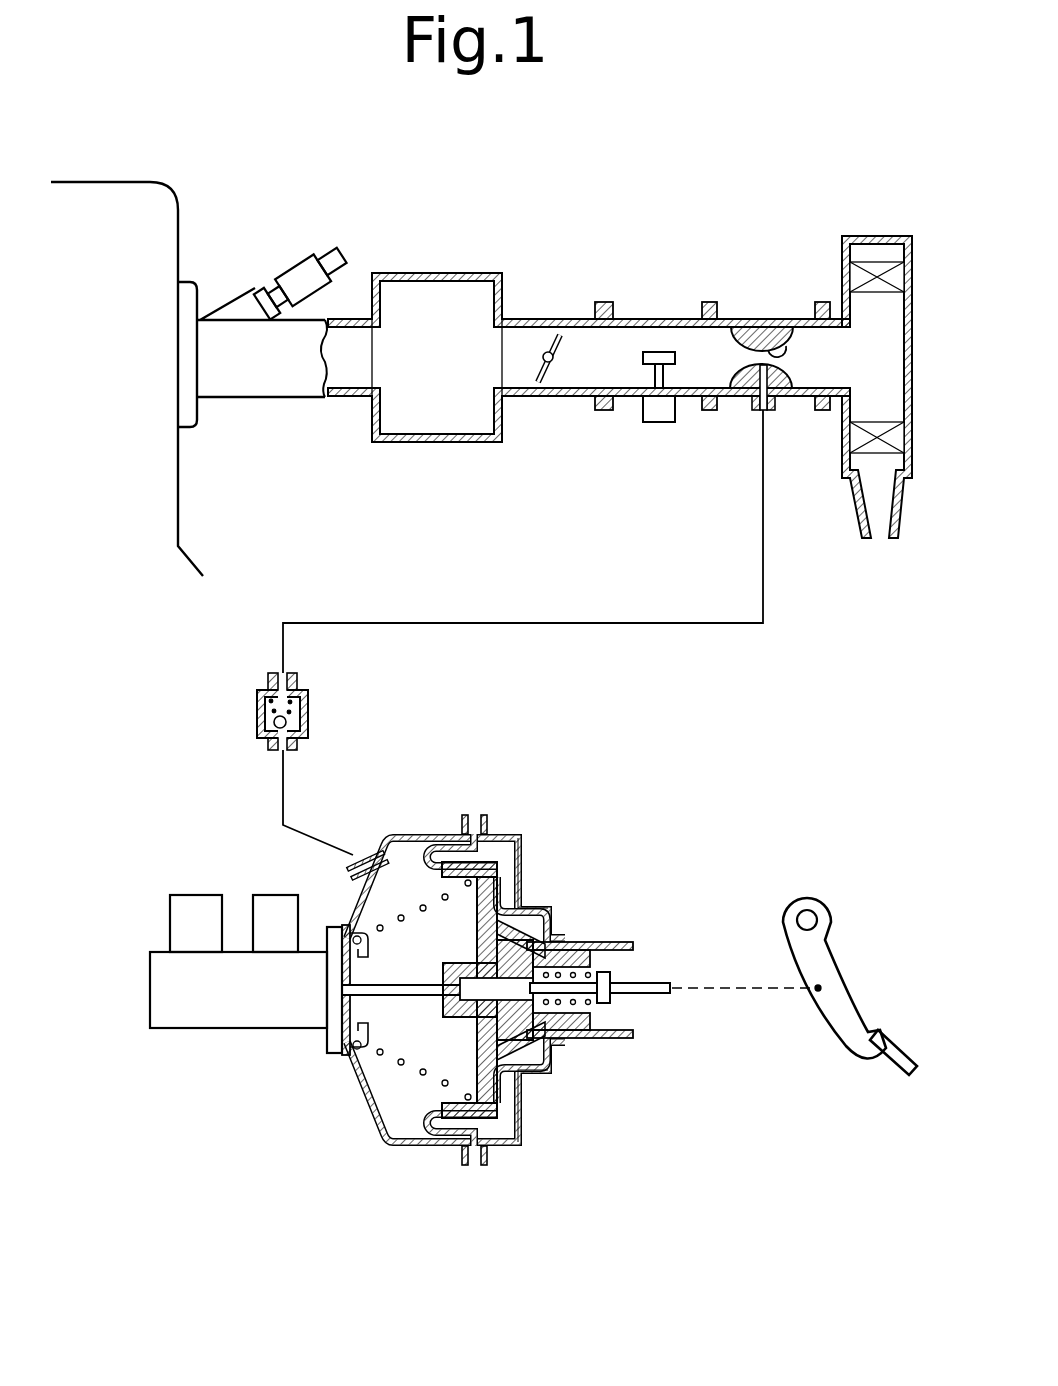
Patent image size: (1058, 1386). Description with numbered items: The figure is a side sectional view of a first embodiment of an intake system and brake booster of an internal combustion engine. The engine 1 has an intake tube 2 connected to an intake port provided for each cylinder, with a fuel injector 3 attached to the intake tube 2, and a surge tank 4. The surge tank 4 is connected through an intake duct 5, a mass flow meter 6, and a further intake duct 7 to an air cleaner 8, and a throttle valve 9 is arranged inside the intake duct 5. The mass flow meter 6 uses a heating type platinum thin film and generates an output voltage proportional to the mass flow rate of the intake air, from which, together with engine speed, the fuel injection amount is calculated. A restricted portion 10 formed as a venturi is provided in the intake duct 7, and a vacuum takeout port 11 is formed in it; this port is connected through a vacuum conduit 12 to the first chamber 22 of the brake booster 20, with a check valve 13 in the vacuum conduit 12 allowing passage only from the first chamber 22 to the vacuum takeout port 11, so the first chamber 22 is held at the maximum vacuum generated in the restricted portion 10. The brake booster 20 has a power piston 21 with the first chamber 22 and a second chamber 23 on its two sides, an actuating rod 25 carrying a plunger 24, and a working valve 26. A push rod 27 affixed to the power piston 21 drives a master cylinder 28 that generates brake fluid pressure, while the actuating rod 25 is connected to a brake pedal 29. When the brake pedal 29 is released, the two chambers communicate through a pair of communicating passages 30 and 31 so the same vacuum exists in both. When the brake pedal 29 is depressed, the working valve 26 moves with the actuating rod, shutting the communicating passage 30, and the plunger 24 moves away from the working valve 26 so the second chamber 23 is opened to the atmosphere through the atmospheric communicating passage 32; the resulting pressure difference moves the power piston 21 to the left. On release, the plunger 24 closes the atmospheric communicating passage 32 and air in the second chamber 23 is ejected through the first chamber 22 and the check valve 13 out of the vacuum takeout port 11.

The engine 1 is at (155, 192).
The intake tube 2 is at (268, 395).
The fuel injector 3 is at (300, 265).
The surge tank 4 is at (440, 272).
The intake duct 5 is at (548, 400).
The mass flow meter 6 is at (653, 312).
The intake duct 7 is at (725, 318).
The air cleaner 8 is at (873, 236).
The throttle valve 9 is at (545, 334).
The restricted portion 10 is at (783, 316).
The vacuum takeout port 11 is at (737, 410).
The vacuum conduit 12 is at (500, 622).
The check valve 13 is at (257, 712).
The brake booster 20 is at (501, 818).
The power piston 21 is at (507, 880).
The first chamber 22 is at (398, 850).
The second chamber 23 is at (503, 847).
The plunger 24 is at (555, 936).
The actuating rod 25 is at (655, 984).
The working valve 26 is at (606, 975).
The push rod 27 is at (358, 1062).
The master cylinder 28 is at (193, 1020).
The brake pedal 29 is at (848, 1038).
The communicating passage 30 is at (527, 907).
The communicating passage 31 is at (545, 1078).
The atmospheric communicating passage 32 is at (578, 1038).